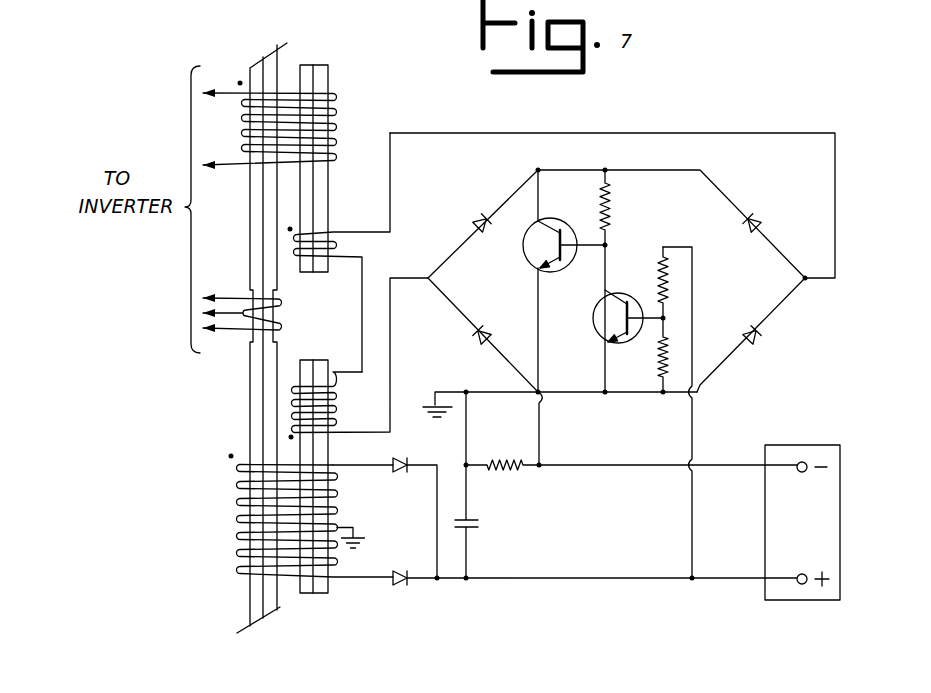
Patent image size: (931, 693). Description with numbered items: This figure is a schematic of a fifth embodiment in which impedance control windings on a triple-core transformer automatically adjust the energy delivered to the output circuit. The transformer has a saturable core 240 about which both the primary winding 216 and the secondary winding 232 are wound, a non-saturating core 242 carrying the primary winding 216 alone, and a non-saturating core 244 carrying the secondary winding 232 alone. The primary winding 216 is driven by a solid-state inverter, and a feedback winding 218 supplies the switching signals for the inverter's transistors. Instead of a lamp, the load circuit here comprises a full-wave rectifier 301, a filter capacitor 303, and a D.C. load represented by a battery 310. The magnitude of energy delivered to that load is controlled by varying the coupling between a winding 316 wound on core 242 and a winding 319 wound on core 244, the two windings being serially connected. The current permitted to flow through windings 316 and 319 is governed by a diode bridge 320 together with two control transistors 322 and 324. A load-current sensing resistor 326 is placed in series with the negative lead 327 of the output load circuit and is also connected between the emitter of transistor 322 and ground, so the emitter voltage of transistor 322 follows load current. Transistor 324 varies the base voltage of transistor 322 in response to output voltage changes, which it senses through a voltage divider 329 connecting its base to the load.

The primary winding 216 is at (283, 92).
The feedback winding 218 is at (232, 298).
The secondary winding 232 is at (242, 549).
The saturable core 240 is at (250, 626).
The non-saturating core 242 is at (332, 180).
The non-saturating core 244 is at (313, 594).
The full-wave rectifier 301 is at (413, 513).
The filter capacitor 303 is at (468, 528).
The battery 310 is at (812, 525).
The winding 316 is at (330, 232).
The winding 319 is at (297, 374).
The diode bridge 320 is at (483, 217).
The control transistor 322 is at (551, 219).
The control transistor 324 is at (615, 343).
The load-current sensing resistor 326 is at (505, 454).
The negative lead 327 is at (721, 465).
The voltage divider 329 is at (660, 282).